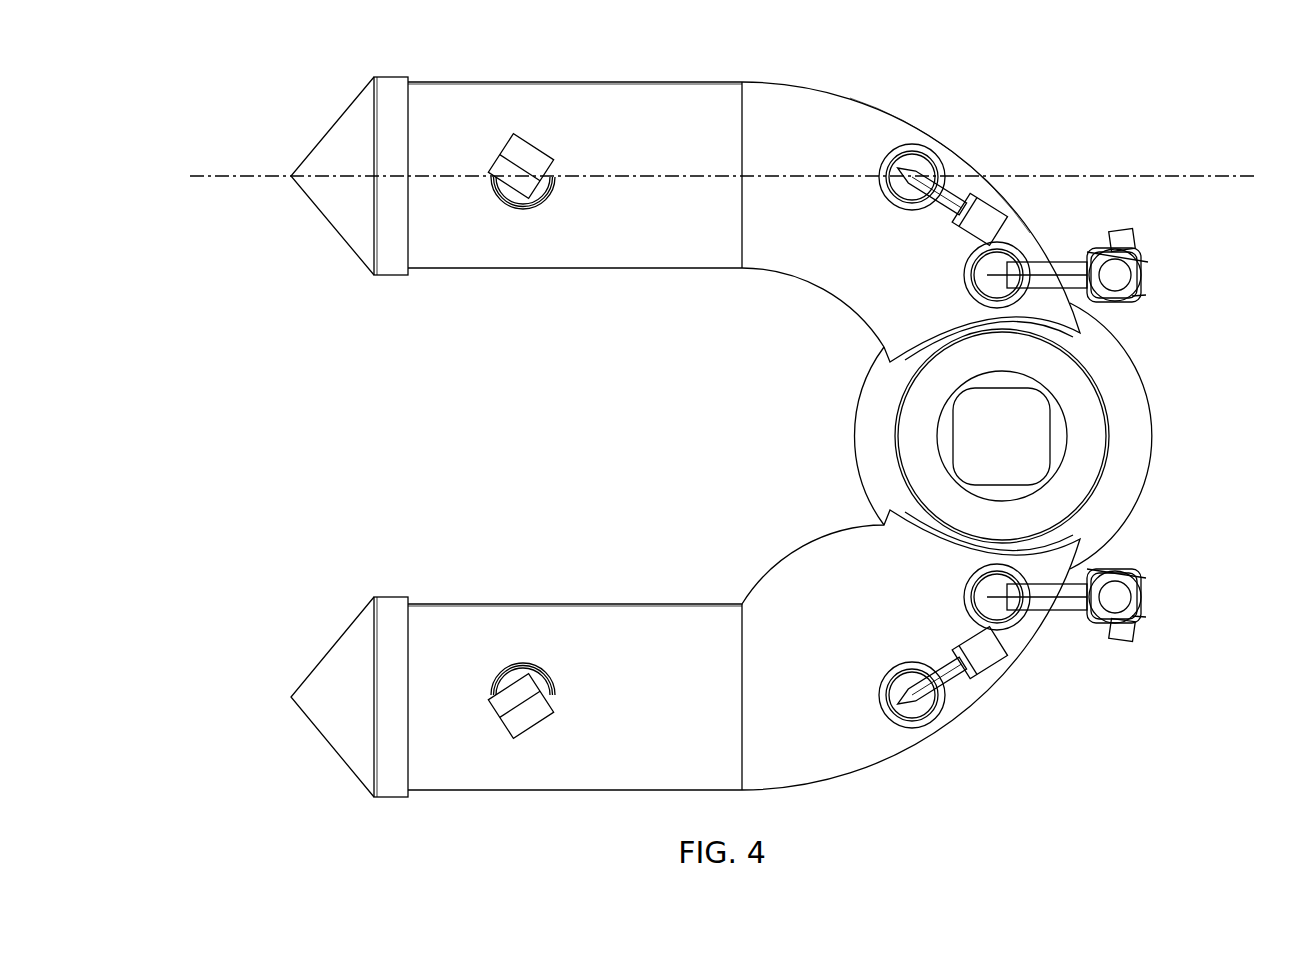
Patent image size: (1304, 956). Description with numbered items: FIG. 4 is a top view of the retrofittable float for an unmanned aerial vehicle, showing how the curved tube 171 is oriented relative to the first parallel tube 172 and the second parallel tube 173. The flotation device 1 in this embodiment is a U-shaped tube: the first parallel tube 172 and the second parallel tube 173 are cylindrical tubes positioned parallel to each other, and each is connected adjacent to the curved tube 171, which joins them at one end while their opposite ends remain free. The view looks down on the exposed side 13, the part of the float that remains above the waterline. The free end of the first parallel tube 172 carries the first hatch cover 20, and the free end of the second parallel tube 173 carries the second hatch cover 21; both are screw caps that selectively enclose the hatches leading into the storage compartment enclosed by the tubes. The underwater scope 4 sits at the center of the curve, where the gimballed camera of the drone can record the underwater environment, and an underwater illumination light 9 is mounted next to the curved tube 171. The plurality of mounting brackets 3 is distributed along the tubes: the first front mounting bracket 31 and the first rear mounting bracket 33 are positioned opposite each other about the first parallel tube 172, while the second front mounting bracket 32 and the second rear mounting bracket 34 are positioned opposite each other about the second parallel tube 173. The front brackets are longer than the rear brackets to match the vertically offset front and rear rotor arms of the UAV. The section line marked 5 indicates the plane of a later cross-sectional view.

The flotation device 1 is at (467, 802).
The plurality of mounting brackets 3 is at (922, 738).
The underwater scope 4 is at (863, 438).
The section line 5 is at (191, 143).
The underwater illumination light 9 is at (1133, 600).
The exposed side 13 is at (627, 712).
The first hatch cover 20 is at (320, 668).
The second hatch cover 21 is at (333, 132).
The first front mounting bracket 31 is at (997, 663).
The second front mounting bracket 32 is at (968, 230).
The first rear mounting bracket 33 is at (535, 720).
The second rear mounting bracket 34 is at (512, 183).
The curved tube 171 is at (887, 127).
The first parallel tube 172 is at (585, 605).
The second parallel tube 173 is at (605, 88).